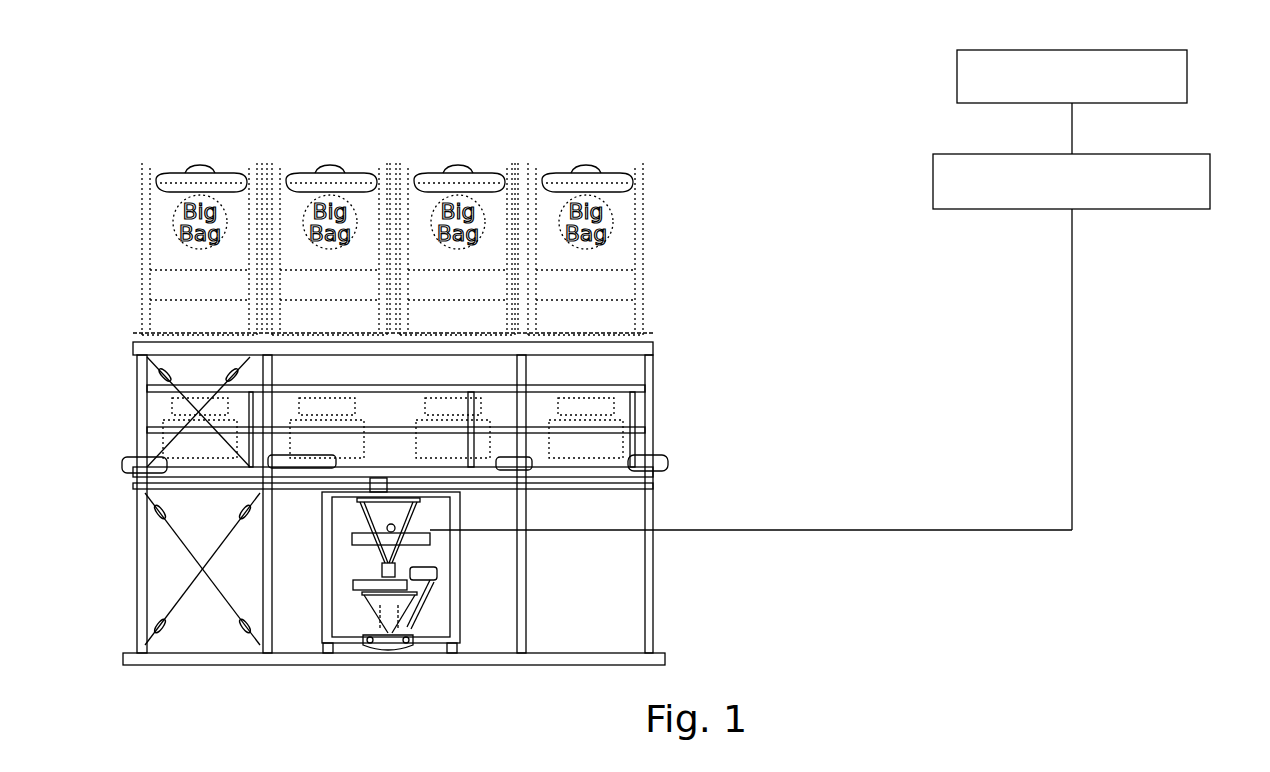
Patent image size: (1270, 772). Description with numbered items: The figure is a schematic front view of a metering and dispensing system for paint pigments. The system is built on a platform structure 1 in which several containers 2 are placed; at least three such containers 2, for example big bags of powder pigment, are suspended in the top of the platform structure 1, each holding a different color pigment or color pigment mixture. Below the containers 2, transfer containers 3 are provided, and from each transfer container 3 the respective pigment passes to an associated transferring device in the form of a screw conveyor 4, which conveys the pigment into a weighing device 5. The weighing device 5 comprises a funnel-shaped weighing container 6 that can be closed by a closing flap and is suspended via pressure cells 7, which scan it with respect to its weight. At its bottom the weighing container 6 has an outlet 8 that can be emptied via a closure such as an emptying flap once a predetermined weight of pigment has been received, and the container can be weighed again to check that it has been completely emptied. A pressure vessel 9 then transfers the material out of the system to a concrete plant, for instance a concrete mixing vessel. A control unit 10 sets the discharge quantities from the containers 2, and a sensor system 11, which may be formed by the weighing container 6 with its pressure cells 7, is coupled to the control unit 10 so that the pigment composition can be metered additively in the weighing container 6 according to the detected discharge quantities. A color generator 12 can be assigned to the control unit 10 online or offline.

The platform structure 1 is at (640, 232).
The containers 2 is at (578, 186).
The transfer containers 3 is at (612, 437).
The screw conveyor 4 is at (640, 485).
The weighing device 5 is at (328, 560).
The weighing container 6 is at (430, 532).
The pressure cells 7 is at (350, 543).
The outlet 8 is at (437, 572).
The pressure vessel 9 is at (430, 600).
The control unit 10 is at (1210, 178).
The sensor system 11 is at (355, 530).
The color generator 12 is at (1187, 75).